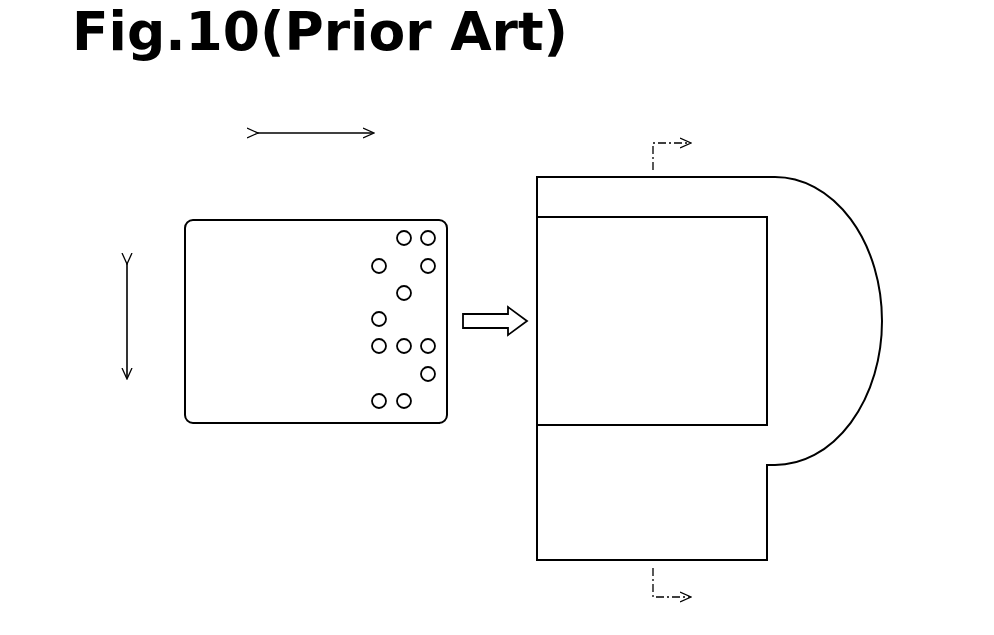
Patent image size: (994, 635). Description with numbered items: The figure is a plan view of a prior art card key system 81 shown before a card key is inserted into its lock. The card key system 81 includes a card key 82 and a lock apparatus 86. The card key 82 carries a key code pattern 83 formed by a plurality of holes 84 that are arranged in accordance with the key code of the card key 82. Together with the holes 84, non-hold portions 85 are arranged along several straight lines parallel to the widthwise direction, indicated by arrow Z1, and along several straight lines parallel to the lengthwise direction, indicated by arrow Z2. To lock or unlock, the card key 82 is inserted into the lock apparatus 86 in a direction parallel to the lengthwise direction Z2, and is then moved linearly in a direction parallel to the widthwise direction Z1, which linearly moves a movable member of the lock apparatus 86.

The card key system 81 is at (818, 168).
The card key 82 is at (320, 424).
The key code pattern 83 is at (355, 242).
The holes 84 is at (428, 232).
The non-hold portions 85 is at (403, 264).
The lock apparatus 86 is at (768, 513).
The widthwise direction Z1 is at (127, 322).
The lengthwise direction Z2 is at (315, 133).